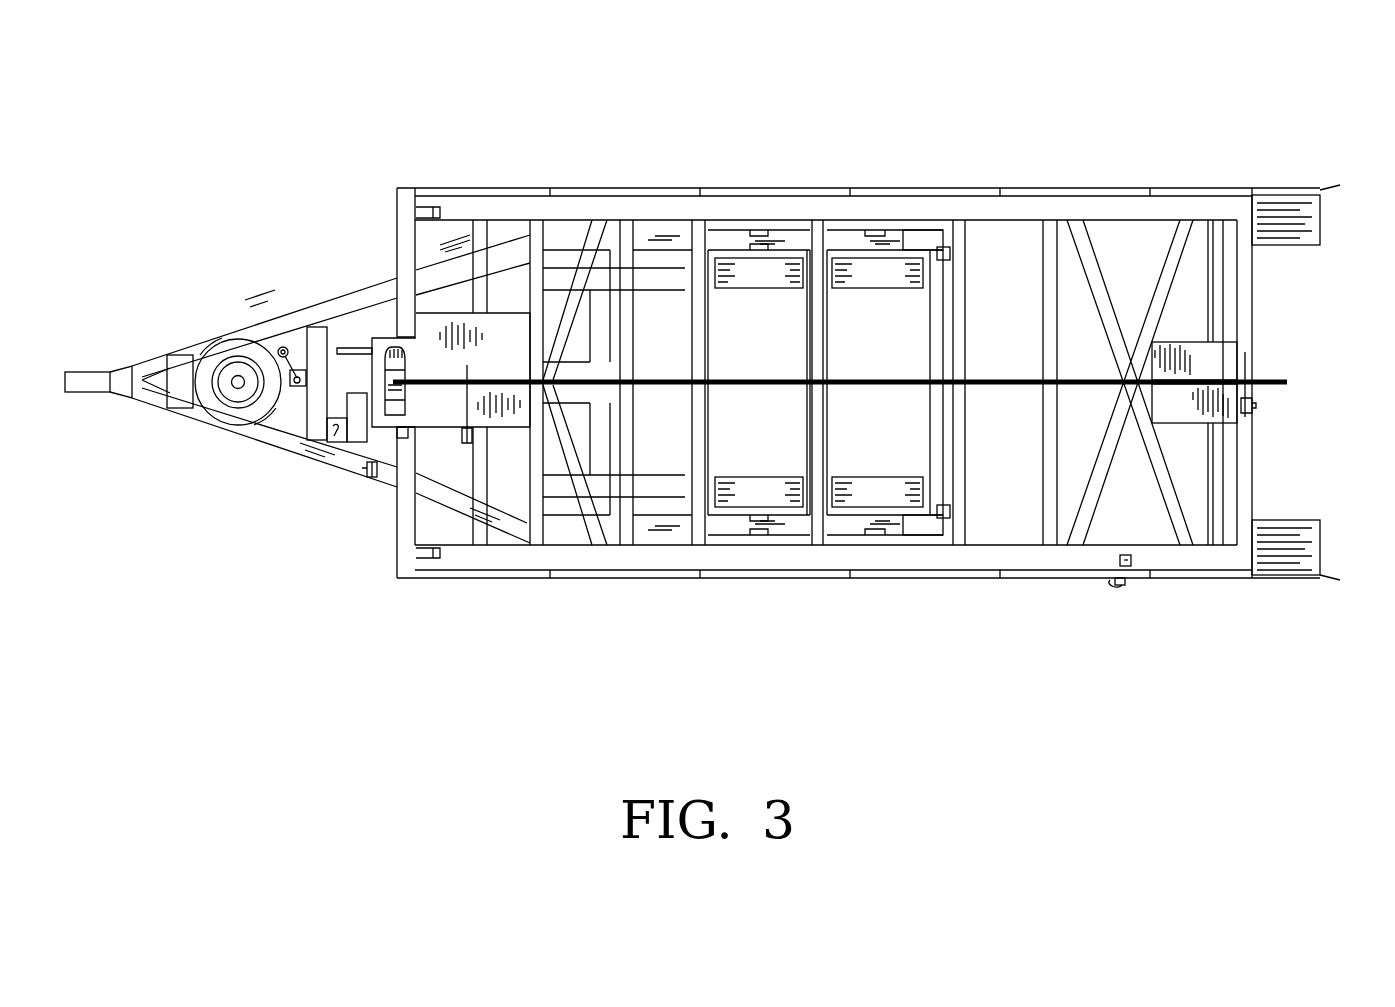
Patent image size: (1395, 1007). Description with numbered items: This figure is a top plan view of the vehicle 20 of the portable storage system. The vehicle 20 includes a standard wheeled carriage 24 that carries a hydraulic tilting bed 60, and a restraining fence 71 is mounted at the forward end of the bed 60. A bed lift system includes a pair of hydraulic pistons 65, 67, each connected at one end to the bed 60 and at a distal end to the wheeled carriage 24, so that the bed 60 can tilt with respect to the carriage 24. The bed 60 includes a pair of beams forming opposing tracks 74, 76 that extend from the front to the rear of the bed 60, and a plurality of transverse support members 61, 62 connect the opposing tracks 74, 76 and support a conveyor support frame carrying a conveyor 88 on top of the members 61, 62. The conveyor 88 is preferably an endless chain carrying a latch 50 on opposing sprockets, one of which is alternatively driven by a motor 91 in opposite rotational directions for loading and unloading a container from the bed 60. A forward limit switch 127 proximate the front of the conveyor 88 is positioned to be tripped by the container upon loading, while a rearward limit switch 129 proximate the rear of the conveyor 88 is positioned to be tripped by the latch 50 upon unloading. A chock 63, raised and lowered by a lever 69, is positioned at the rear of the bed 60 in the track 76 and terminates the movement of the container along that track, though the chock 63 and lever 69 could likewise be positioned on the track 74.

The vehicle 20 is at (793, 130).
The wheeled carriage 24 is at (284, 504).
The latch 50 is at (423, 312).
The hydraulic tilting bed 60 is at (1328, 392).
The transverse support member 61 is at (818, 227).
The transverse support member 62 is at (1083, 237).
The chock 63 is at (1130, 565).
The hydraulic piston 65 is at (553, 277).
The hydraulic piston 67 is at (553, 487).
The lever 69 is at (1126, 590).
The restraining fence 71 is at (407, 220).
The track 74 is at (930, 207).
The track 76 is at (938, 560).
The conveyor 88 is at (750, 388).
The motor 91 is at (388, 380).
The forward limit switch 127 is at (463, 432).
The rearward limit switch 129 is at (1250, 410).